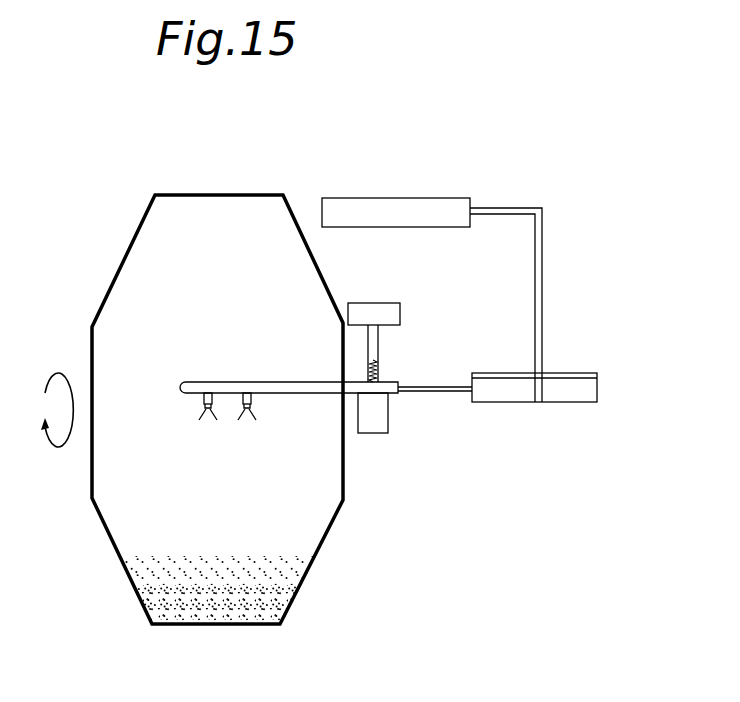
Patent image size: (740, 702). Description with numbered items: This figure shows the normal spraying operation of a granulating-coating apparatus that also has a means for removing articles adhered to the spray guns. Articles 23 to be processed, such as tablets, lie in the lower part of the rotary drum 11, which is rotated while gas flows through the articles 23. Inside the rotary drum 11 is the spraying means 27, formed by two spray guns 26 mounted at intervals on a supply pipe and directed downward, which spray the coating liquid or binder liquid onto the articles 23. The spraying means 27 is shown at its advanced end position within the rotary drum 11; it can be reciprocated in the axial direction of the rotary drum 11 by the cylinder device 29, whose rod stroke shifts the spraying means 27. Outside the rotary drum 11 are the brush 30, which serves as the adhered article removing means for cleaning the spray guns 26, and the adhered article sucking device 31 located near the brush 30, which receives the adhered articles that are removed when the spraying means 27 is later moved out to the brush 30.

The rotary drum 11 is at (284, 195).
The articles 23 is at (283, 594).
The spray guns 26 is at (254, 411).
The spraying means 27 is at (228, 381).
The cylinder device 29 is at (419, 203).
The brush 30 is at (379, 362).
The adhered article sucking device 31 is at (370, 349).